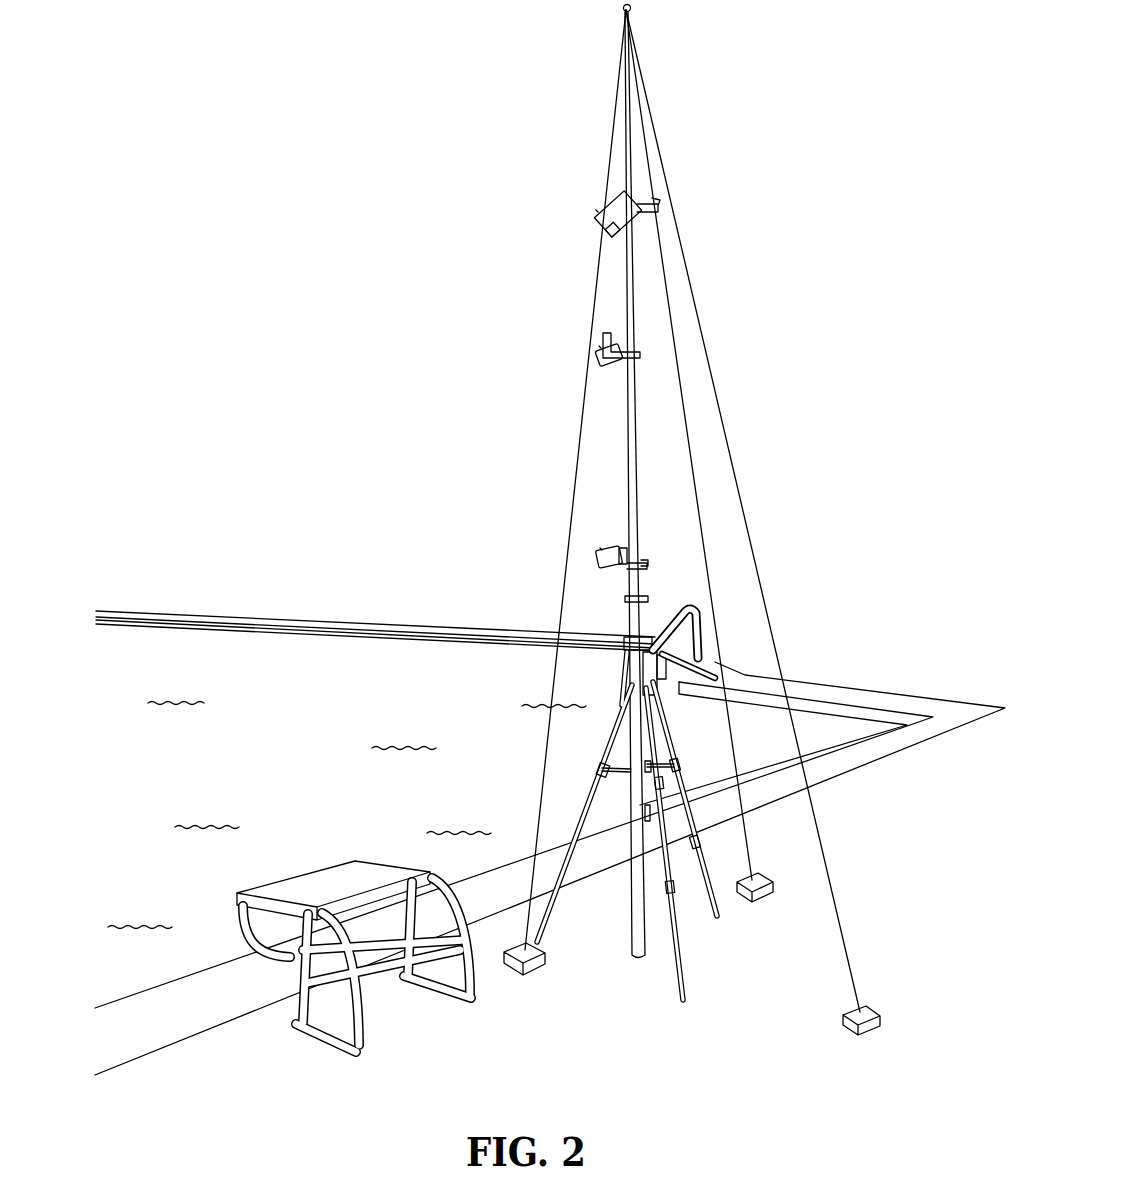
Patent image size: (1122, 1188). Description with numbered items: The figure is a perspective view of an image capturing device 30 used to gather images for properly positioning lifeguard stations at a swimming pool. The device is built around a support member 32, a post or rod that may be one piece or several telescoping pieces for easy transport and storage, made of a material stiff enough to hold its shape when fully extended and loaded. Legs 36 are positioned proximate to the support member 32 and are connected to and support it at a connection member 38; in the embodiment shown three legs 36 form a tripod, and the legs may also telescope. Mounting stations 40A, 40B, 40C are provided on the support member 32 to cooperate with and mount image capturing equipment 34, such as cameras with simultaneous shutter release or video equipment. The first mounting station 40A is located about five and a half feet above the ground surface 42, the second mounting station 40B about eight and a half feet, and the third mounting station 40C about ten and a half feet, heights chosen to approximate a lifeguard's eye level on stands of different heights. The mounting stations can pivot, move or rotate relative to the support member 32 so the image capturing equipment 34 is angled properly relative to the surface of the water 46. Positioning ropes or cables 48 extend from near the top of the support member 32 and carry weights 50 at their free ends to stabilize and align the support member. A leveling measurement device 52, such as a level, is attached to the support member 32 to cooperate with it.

The image capturing device 30 is at (748, 296).
The support member 32 is at (626, 258).
The image capturing equipment 34 is at (596, 210).
The legs 36 is at (575, 840).
The connection member 38 is at (716, 678).
The first mounting station 40A is at (626, 573).
The second mounting station 40B is at (611, 362).
The third mounting station 40C is at (650, 211).
The ground surface 42 is at (687, 1072).
The water 46 is at (276, 804).
The positioning ropes or cables 48 is at (660, 152).
The weights 50 is at (756, 880).
The leveling measurement device 52 is at (644, 816).